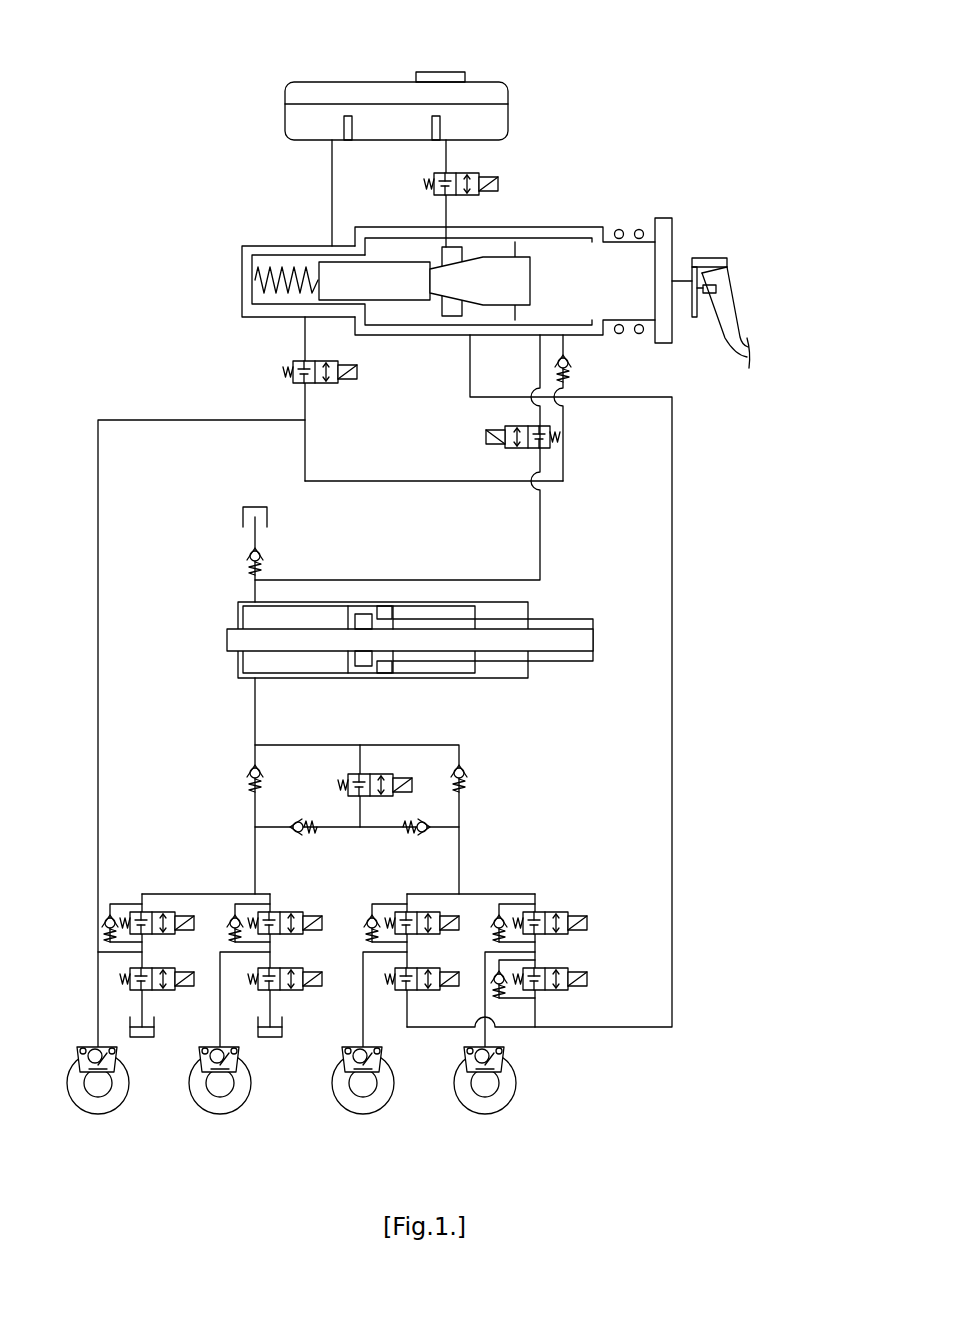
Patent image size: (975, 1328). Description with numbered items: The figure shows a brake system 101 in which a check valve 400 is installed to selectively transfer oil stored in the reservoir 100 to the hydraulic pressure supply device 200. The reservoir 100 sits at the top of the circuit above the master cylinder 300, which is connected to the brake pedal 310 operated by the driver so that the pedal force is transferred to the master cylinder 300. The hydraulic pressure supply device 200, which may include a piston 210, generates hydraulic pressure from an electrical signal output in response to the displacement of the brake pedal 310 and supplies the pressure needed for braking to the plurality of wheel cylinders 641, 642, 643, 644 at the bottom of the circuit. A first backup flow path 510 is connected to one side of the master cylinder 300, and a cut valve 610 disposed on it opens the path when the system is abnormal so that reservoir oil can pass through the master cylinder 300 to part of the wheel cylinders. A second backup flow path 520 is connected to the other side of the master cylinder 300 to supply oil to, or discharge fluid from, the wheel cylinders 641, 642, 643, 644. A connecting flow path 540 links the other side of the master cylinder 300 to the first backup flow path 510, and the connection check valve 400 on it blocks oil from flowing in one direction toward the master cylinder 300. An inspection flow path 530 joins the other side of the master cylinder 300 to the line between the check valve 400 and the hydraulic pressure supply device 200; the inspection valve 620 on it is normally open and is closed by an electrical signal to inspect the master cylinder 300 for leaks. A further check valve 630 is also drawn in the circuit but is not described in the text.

The brake system 101 is at (115, 39).
The reservoir 100 is at (268, 117).
The master cylinder 300 is at (228, 269).
The brake pedal 310 is at (722, 304).
The hydraulic pressure supply device 200 is at (357, 664).
The piston 210 is at (383, 665).
The check valve 400 is at (282, 560).
The first backup flow path 510 is at (98, 530).
The second backup flow path 520 is at (672, 740).
The inspection flow path 530 is at (542, 533).
The connecting flow path 540 is at (403, 483).
The cut valve 610 is at (337, 384).
The inspection valve 620 is at (486, 437).
The check valve 630 is at (570, 365).
The wheel cylinder 641 is at (118, 1056).
The wheel cylinder 642 is at (240, 1056).
The wheel cylinder 643 is at (383, 1056).
The wheel cylinder 644 is at (505, 1056).